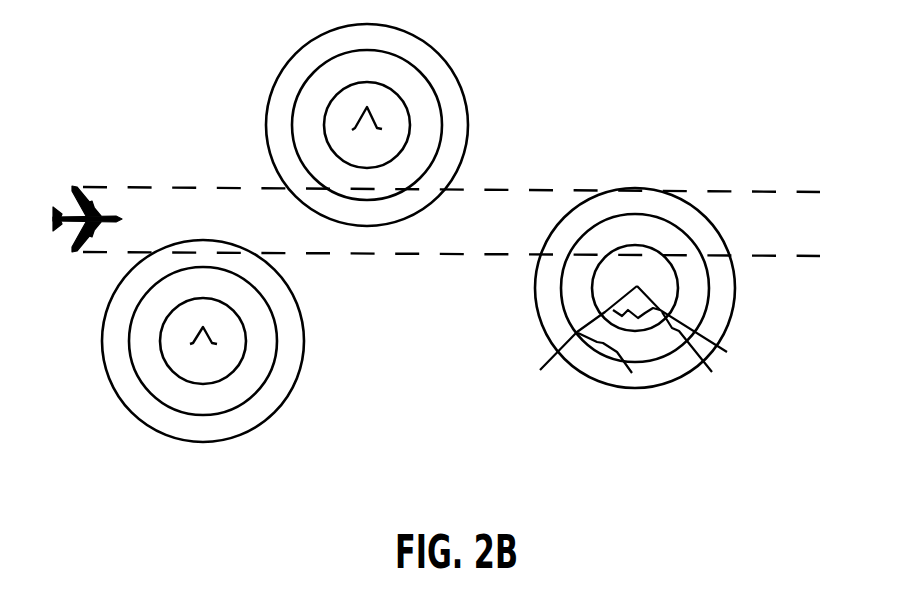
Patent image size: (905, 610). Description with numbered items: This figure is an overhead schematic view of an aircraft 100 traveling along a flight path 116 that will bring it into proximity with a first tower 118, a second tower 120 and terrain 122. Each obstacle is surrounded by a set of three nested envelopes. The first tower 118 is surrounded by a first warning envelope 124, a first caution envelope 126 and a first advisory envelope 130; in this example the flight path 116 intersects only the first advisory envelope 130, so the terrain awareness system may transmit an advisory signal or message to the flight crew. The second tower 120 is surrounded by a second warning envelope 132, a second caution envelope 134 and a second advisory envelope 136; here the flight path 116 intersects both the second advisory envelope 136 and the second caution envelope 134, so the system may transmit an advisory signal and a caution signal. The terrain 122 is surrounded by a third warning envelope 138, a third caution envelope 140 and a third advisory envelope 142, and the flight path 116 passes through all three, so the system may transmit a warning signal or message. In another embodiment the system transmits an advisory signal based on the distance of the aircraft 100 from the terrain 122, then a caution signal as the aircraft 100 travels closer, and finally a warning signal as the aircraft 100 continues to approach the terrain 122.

The aircraft 100 is at (77, 192).
The flight path 116 is at (183, 187).
The first tower 118 is at (190, 344).
The second tower 120 is at (352, 130).
The terrain 122 is at (637, 286).
The first warning envelope 124 is at (158, 345).
The first caution envelope 126 is at (140, 382).
The first advisory envelope 130 is at (148, 425).
The second warning envelope 132 is at (306, 42).
The second caution envelope 134 is at (303, 84).
The second advisory envelope 136 is at (323, 122).
The third warning envelope 138 is at (605, 384).
The third caution envelope 140 is at (645, 360).
The third advisory envelope 142 is at (674, 310).